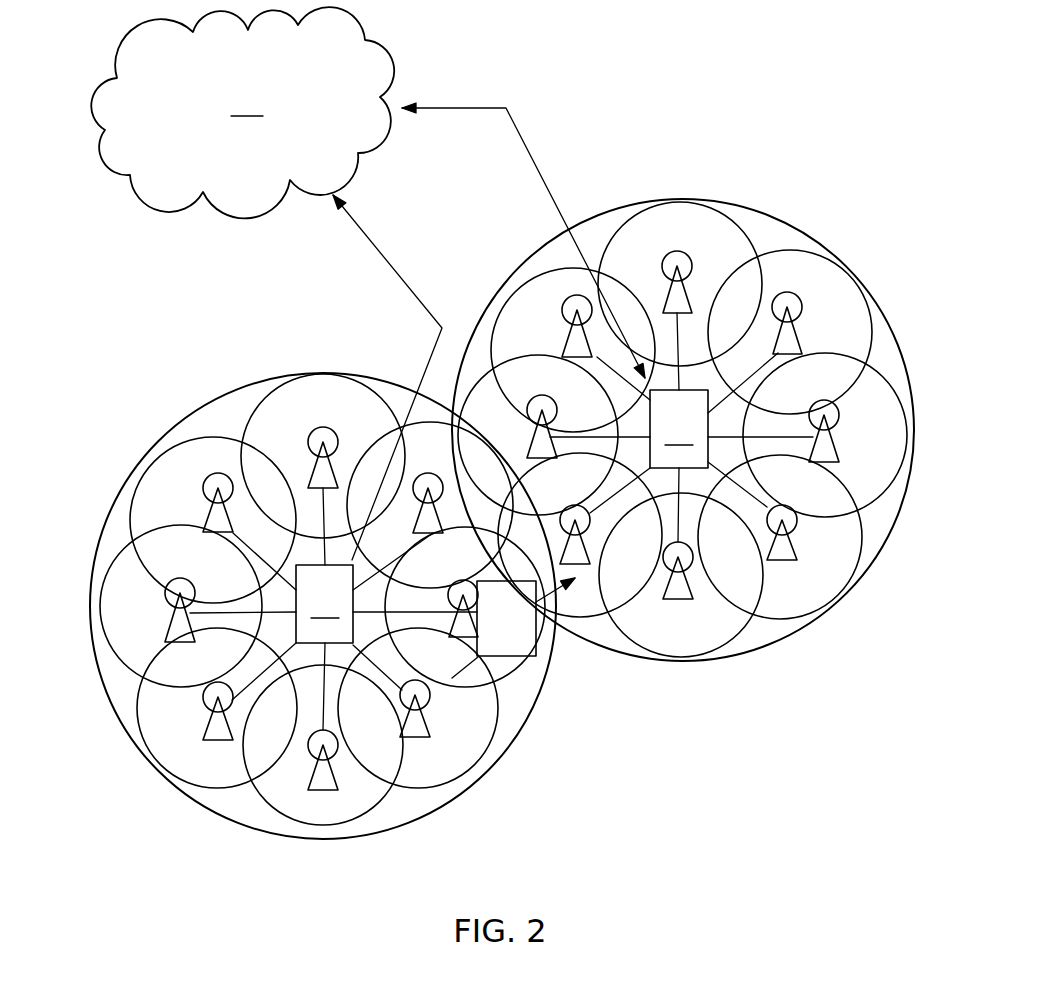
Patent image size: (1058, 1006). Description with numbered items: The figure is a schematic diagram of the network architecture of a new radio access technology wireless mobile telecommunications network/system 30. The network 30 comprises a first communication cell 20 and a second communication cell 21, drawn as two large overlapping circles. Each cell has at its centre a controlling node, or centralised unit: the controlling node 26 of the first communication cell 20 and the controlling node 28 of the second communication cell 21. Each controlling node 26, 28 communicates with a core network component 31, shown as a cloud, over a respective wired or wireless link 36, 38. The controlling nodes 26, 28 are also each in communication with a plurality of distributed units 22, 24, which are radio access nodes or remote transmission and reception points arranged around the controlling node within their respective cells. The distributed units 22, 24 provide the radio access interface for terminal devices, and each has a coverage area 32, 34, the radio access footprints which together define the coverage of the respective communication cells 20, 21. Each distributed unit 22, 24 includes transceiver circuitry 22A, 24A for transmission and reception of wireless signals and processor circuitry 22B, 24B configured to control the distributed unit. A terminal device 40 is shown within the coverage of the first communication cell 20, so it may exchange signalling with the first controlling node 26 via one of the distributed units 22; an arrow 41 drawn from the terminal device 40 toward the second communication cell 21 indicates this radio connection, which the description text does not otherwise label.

The first communication cell 20 is at (228, 390).
The second communication cell 21 is at (683, 197).
The distributed units 22 is at (168, 632).
The transceiver circuitry 22A is at (428, 707).
The processor circuitry 22B is at (433, 735).
The distributed units 24 is at (843, 447).
The transceiver circuitry 24A is at (795, 530).
The processor circuitry 24B is at (803, 555).
The controlling node 26 is at (333, 609).
The controlling node 28 is at (681, 427).
The new RAT wireless mobile telecommunications network/system 30 is at (678, 72).
The core network component 31 is at (242, 112).
The coverage area 32 is at (123, 543).
The coverage area 34 is at (790, 250).
The wired or wireless link 36 is at (373, 244).
The wired or wireless link 38 is at (468, 107).
The terminal device 40 is at (503, 658).
The communication link 41 is at (578, 590).